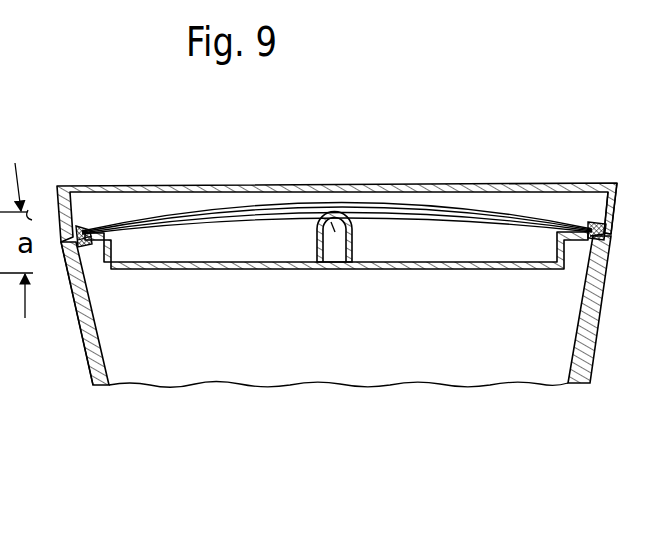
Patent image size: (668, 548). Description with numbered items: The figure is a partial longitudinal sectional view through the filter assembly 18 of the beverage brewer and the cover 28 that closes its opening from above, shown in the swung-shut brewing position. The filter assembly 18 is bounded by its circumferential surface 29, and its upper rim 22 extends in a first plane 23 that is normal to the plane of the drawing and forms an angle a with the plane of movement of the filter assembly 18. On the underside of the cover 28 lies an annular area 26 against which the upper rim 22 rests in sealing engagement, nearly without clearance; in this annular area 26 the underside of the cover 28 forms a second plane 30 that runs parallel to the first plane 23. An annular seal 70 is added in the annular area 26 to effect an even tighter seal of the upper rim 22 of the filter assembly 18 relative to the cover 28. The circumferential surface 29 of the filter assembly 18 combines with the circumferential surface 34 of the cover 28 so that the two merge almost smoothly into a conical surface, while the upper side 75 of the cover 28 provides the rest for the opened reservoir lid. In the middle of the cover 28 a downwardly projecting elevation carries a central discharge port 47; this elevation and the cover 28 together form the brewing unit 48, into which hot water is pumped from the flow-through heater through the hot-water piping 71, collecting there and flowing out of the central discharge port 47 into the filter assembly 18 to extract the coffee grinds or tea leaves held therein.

The filter assembly 18 is at (593, 380).
The upper rim 22 is at (68, 246).
The first plane 23 is at (38, 202).
The annular area 26 is at (84, 235).
The cover 28 is at (481, 184).
The circumferential surface 29 is at (90, 372).
The second plane 30 is at (4, 205).
The circumferential surface 34 is at (617, 190).
The central discharge port 47 is at (333, 272).
The brewing unit 48 is at (242, 273).
The annular seal 70 is at (90, 246).
The hot-water piping 71 is at (334, 232).
The upper side 75 is at (262, 184).